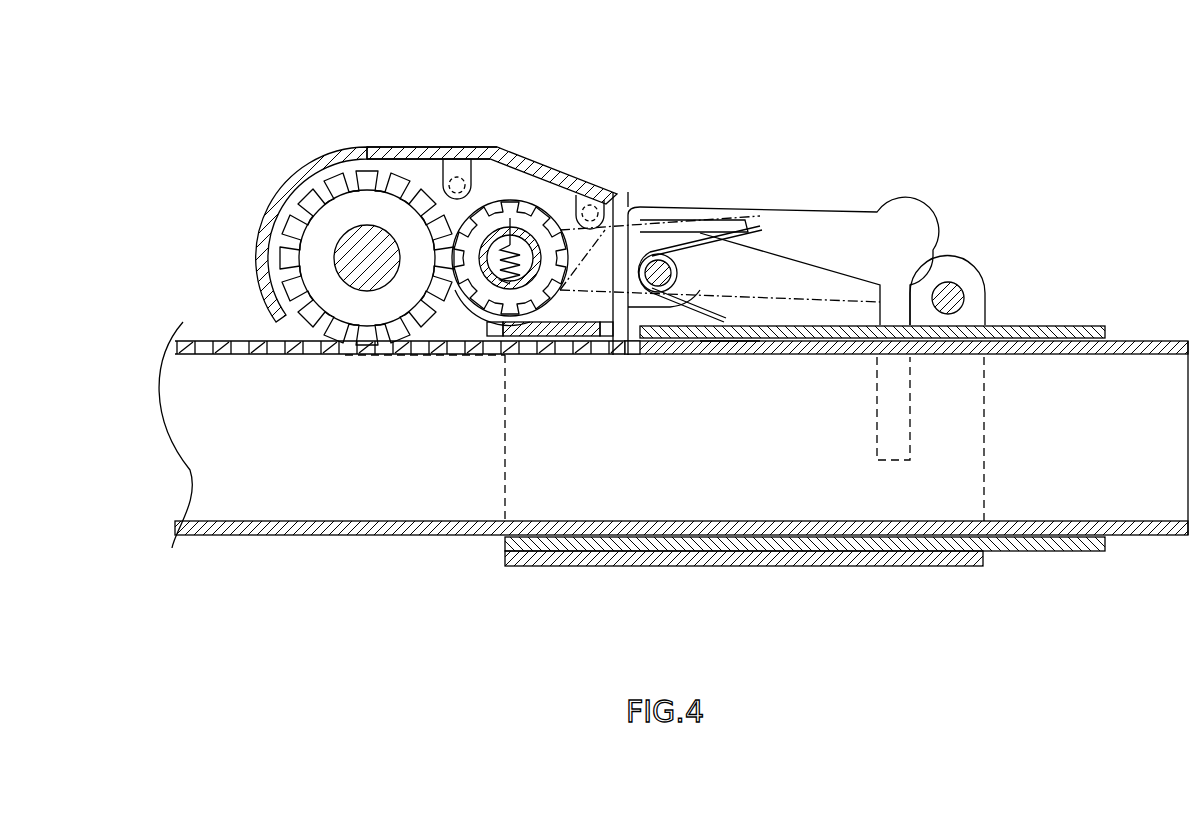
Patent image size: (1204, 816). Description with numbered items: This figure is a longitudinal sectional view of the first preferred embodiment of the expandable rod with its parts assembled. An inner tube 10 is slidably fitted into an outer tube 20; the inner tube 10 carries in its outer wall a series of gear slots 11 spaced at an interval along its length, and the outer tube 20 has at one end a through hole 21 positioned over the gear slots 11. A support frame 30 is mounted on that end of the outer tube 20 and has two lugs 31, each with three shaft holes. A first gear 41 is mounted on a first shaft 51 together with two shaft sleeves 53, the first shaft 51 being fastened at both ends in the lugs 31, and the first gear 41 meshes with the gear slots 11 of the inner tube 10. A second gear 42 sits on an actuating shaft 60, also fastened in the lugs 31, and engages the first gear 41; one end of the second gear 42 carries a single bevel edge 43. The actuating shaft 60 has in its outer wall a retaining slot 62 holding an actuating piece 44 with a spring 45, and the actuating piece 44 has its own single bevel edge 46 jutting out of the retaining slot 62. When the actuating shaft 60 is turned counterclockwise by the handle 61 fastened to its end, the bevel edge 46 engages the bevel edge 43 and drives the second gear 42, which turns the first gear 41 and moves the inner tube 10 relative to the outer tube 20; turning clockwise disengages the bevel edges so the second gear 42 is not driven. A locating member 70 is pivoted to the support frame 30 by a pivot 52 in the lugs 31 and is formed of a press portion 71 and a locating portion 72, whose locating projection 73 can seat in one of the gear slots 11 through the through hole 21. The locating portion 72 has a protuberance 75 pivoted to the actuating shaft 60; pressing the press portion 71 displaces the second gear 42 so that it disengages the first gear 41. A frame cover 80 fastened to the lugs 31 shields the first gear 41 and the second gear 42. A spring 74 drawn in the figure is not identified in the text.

The inner tube 10 is at (330, 535).
The gear slots 11 is at (433, 350).
The outer tube 20 is at (1045, 326).
The through hole 21 is at (635, 357).
The support frame 30 is at (793, 568).
The lugs 31 is at (498, 170).
The first gear 41 is at (333, 200).
The second gear 42 is at (596, 222).
The single bevel edge 43 is at (528, 200).
The actuating piece 44 is at (477, 202).
The spring 45 is at (520, 358).
The single bevel edge 46 is at (518, 214).
The first shaft 51 is at (333, 250).
The pivot 52 is at (727, 360).
The shaft sleeves 53 is at (280, 240).
The actuating shaft 60 is at (467, 353).
The handle 61 is at (872, 214).
The retaining slot 62 is at (500, 350).
The locating member 70 is at (687, 84).
The press portion 71 is at (690, 255).
The locating portion 72 is at (625, 207).
The locating projection 73 is at (617, 360).
The torsion spring 74 is at (793, 363).
The protuberance 75 is at (568, 360).
The frame cover 80 is at (413, 147).